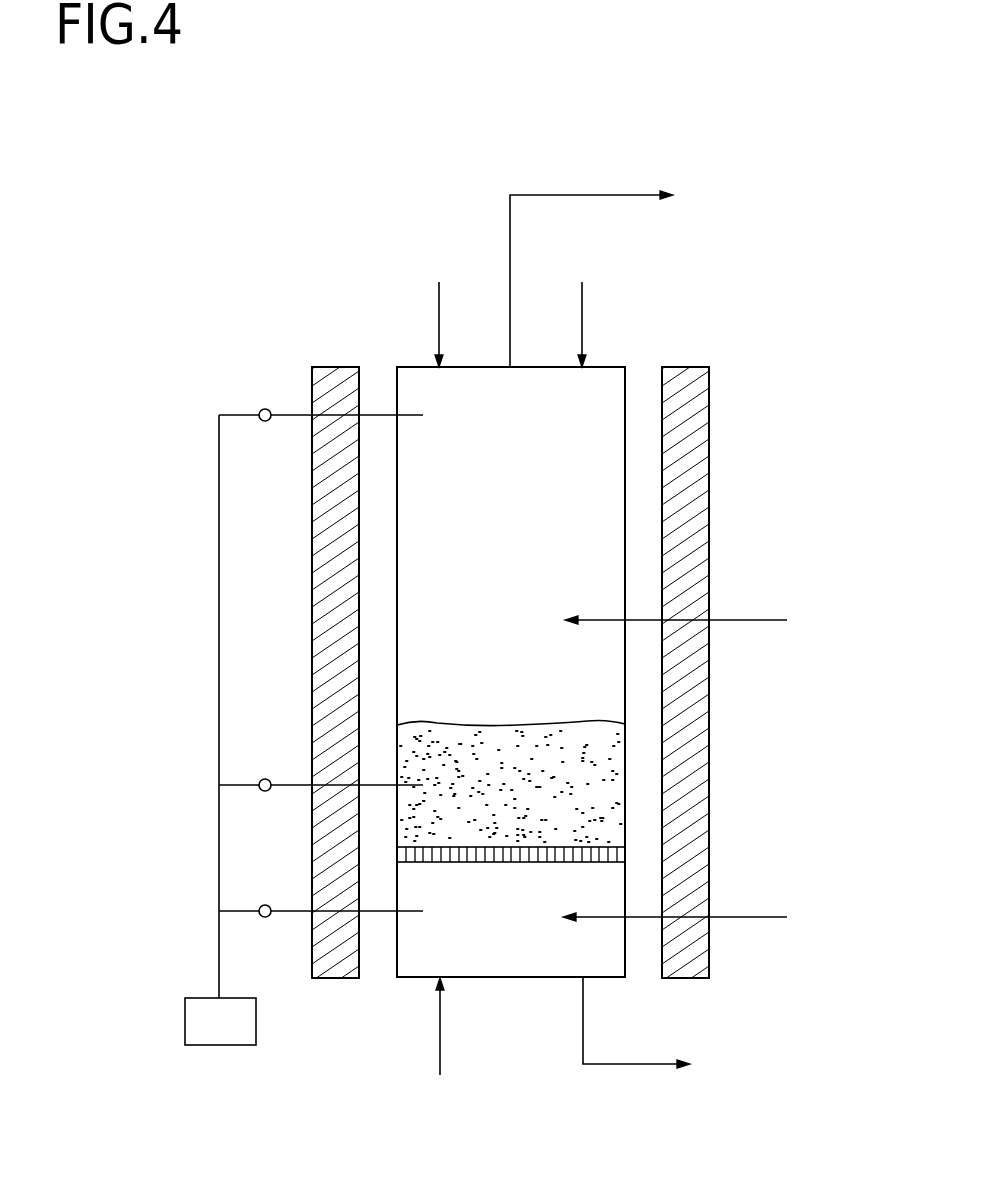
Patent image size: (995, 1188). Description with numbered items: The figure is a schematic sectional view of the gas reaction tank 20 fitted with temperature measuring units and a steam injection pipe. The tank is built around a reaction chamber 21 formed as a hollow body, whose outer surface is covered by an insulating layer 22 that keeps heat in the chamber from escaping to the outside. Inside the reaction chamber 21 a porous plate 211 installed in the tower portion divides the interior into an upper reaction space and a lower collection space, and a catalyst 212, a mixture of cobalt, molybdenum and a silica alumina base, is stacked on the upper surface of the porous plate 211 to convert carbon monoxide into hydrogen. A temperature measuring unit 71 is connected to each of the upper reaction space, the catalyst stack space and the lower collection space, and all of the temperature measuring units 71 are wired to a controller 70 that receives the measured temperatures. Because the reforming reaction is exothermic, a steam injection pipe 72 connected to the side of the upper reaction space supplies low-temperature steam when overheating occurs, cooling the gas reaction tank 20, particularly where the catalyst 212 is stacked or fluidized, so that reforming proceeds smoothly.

The gas reaction tank 20 is at (815, 450).
The reaction chamber 21 is at (628, 464).
The insulating layer 22 is at (710, 527).
The controller 70 is at (217, 1049).
The temperature measuring unit 71 is at (286, 412).
The steam injection pipe 72 is at (760, 620).
The porous plate 211 is at (600, 856).
The catalyst 212 is at (607, 800).